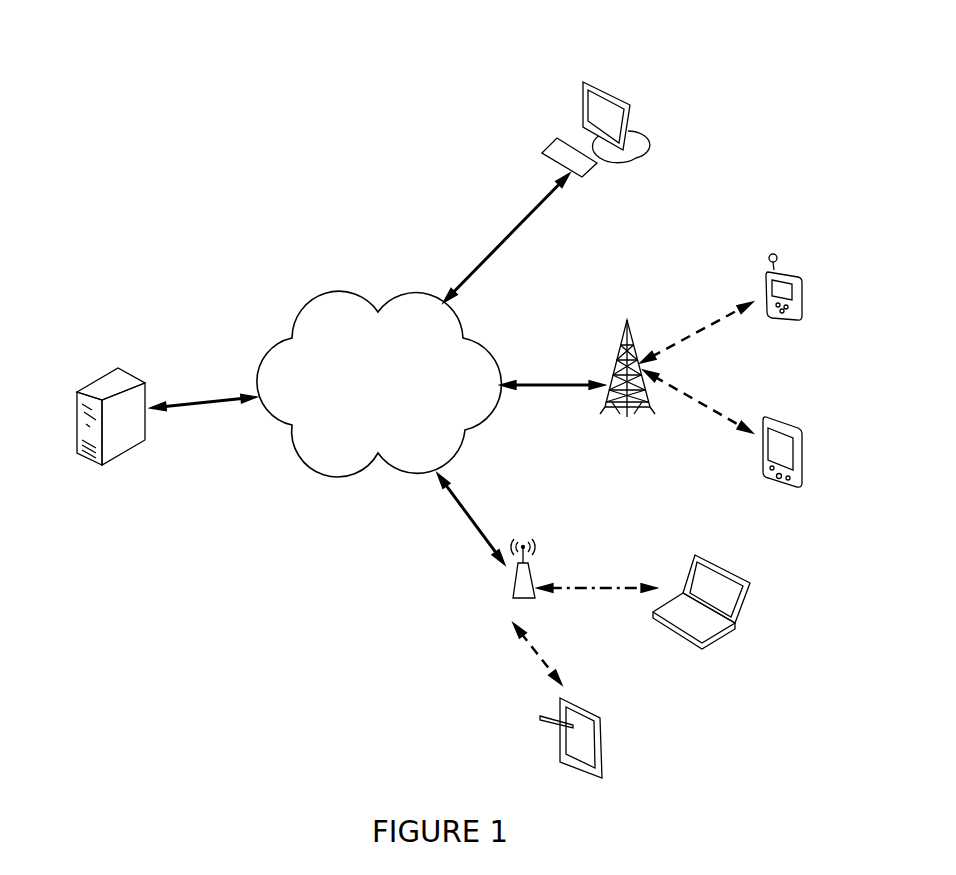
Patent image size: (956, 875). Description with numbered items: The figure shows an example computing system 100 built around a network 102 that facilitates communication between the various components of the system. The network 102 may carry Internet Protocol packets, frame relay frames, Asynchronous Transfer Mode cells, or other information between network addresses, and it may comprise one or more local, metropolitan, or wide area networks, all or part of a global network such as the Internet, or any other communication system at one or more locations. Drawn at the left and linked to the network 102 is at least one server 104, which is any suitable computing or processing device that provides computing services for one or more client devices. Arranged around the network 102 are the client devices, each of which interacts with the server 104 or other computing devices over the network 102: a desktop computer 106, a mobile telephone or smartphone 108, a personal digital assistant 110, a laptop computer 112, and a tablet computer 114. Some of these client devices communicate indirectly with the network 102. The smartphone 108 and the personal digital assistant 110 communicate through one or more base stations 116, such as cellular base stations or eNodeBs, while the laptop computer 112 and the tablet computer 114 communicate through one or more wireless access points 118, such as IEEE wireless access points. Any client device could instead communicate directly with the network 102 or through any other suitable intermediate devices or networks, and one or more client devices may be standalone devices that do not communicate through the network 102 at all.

The computing system 100 is at (198, 176).
The network 102 is at (292, 305).
The server 104 is at (93, 378).
The desktop computer 106 is at (580, 87).
The mobile telephone or smartphone 108 is at (770, 268).
The personal digital assistant (PDA) 110 is at (792, 425).
The laptop computer 112 is at (747, 597).
The tablet computer 114 is at (602, 733).
The base station 116 is at (637, 407).
The wireless access point 118 is at (533, 582).